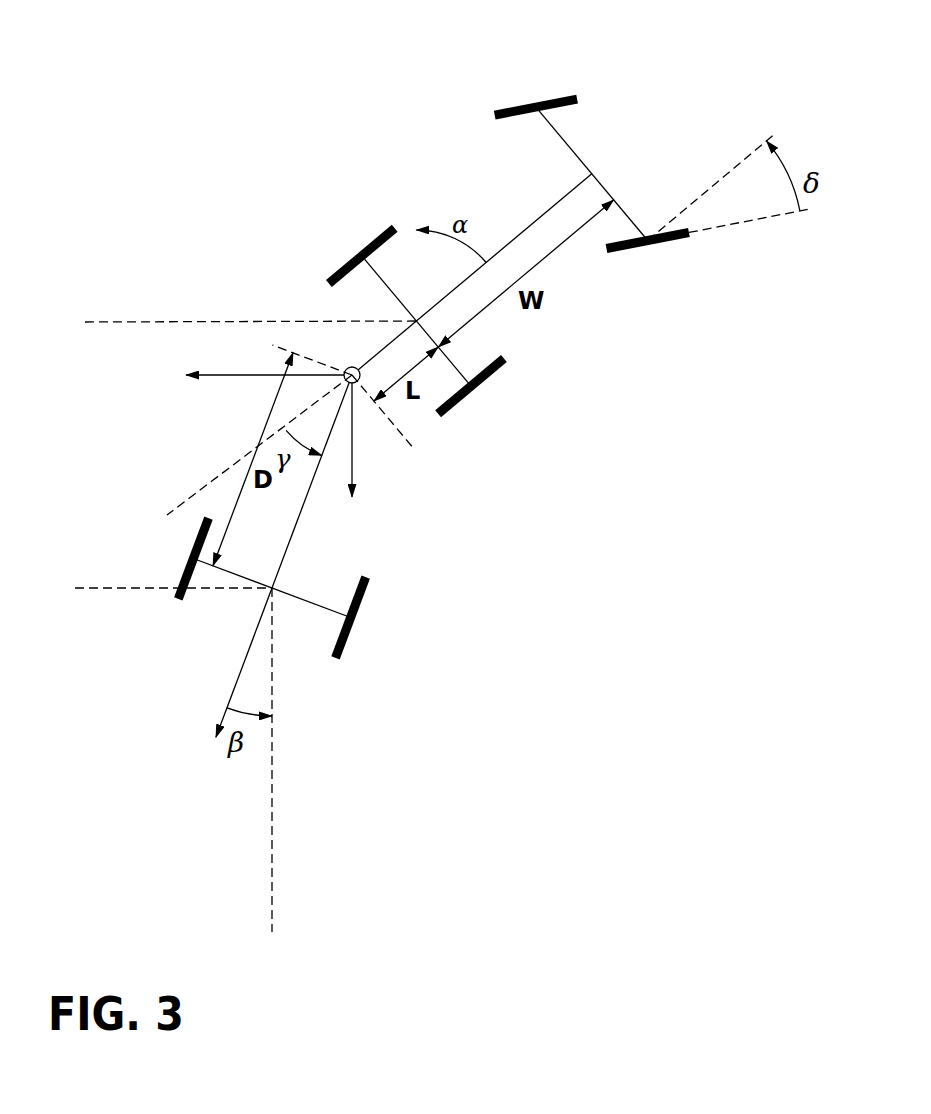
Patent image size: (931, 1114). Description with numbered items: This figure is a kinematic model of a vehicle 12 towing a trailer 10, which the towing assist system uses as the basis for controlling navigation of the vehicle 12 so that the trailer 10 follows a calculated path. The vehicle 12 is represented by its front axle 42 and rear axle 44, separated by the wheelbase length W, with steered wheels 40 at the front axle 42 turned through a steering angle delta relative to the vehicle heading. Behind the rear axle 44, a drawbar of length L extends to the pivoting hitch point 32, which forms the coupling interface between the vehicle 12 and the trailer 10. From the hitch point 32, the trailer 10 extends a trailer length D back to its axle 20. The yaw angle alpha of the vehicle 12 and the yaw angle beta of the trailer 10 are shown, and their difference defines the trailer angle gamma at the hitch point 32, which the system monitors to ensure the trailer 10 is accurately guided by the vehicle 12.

The trailer 10 is at (410, 538).
The vehicle 12 is at (583, 333).
The axle 20 is at (303, 600).
The hitch point 32 is at (347, 367).
The steered wheels 40 is at (537, 92).
The front axle 42 is at (577, 147).
The rear axle 44 is at (383, 295).